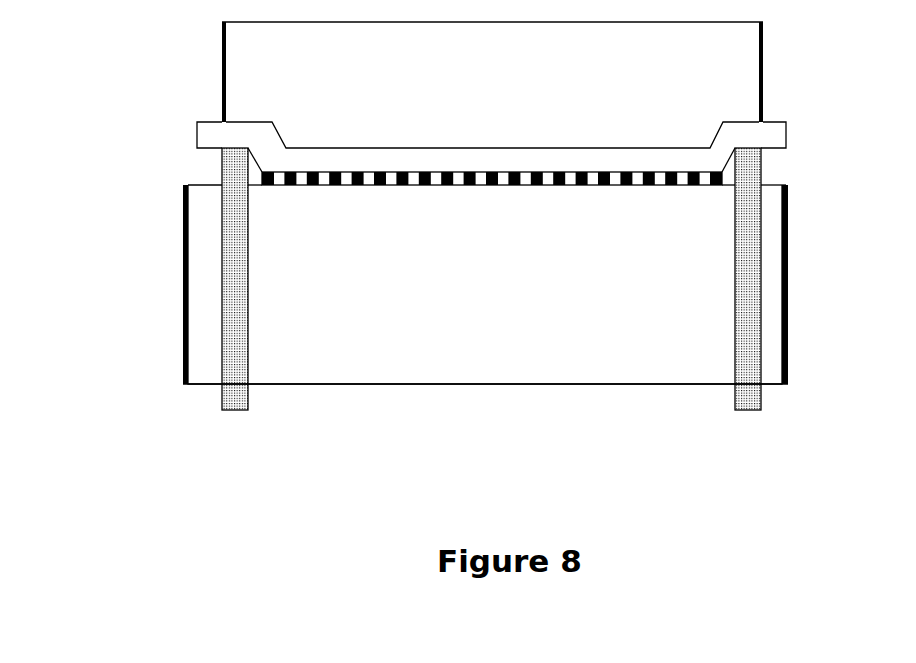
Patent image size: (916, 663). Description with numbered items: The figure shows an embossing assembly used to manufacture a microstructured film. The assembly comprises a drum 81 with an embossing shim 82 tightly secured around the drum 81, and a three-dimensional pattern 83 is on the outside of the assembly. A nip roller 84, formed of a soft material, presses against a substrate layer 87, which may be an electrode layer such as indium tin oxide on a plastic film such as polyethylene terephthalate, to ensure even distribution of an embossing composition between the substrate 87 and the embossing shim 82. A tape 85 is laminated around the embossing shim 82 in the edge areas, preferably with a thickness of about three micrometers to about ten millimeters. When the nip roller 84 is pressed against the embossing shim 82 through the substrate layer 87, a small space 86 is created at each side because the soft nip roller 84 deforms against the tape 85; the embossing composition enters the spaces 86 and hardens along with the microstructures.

The drum 81 is at (183, 358).
The embossing shim 82 is at (372, 348).
The three-dimensional pattern 83 is at (597, 186).
The nip roller 84 is at (492, 72).
The tape 85 is at (222, 285).
The space 86 is at (246, 172).
The substrate layer 87 is at (244, 132).